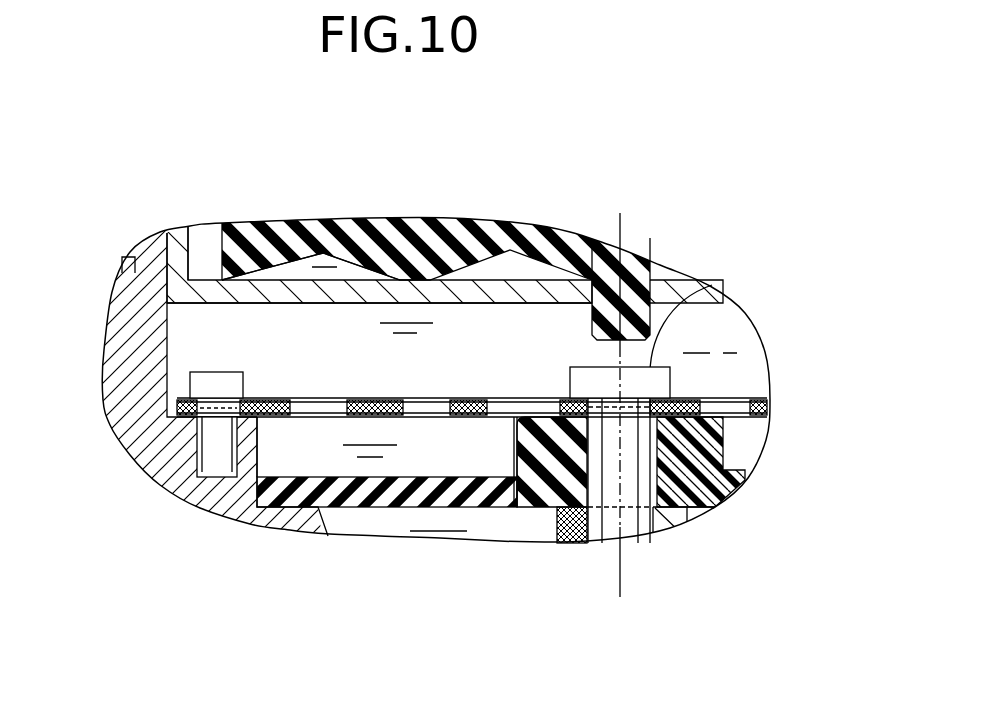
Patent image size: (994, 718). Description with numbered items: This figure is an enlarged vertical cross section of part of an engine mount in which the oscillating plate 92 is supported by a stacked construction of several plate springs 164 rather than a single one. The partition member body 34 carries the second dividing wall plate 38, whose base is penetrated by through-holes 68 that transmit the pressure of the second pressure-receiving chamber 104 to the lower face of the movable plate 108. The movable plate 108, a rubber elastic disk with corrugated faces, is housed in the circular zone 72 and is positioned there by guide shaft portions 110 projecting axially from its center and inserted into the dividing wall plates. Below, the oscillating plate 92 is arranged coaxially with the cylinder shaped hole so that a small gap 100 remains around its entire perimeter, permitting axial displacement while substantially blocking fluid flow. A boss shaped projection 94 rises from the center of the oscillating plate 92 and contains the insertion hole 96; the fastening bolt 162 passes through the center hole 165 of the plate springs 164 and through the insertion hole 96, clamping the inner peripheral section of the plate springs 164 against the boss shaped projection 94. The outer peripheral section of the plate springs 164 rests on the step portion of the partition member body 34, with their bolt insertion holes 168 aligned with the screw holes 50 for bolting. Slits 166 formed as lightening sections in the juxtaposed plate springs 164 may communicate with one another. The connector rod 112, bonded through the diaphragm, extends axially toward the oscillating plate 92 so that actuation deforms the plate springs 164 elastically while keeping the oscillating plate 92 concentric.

The partition member body 34 is at (133, 402).
The second dividing wall plate 38 is at (505, 292).
The screw holes 50 is at (183, 492).
The through-holes 68 is at (297, 258).
The circular zone 72 is at (203, 243).
The oscillating plate 92 is at (372, 505).
The boss shaped projection 94 is at (707, 453).
The insertion hole 96 is at (593, 510).
The gap 100 is at (255, 495).
The second pressure-receiving chamber 104 is at (190, 325).
The movable plate 108 is at (407, 229).
The guide shaft portions 110 is at (640, 300).
The connector rod 112 is at (665, 523).
The fastening bolt 162 is at (652, 365).
The plate spring 164 is at (467, 397).
The center hole 165 is at (597, 385).
The slits 166 is at (336, 397).
The bolt insertion holes 168 is at (193, 378).